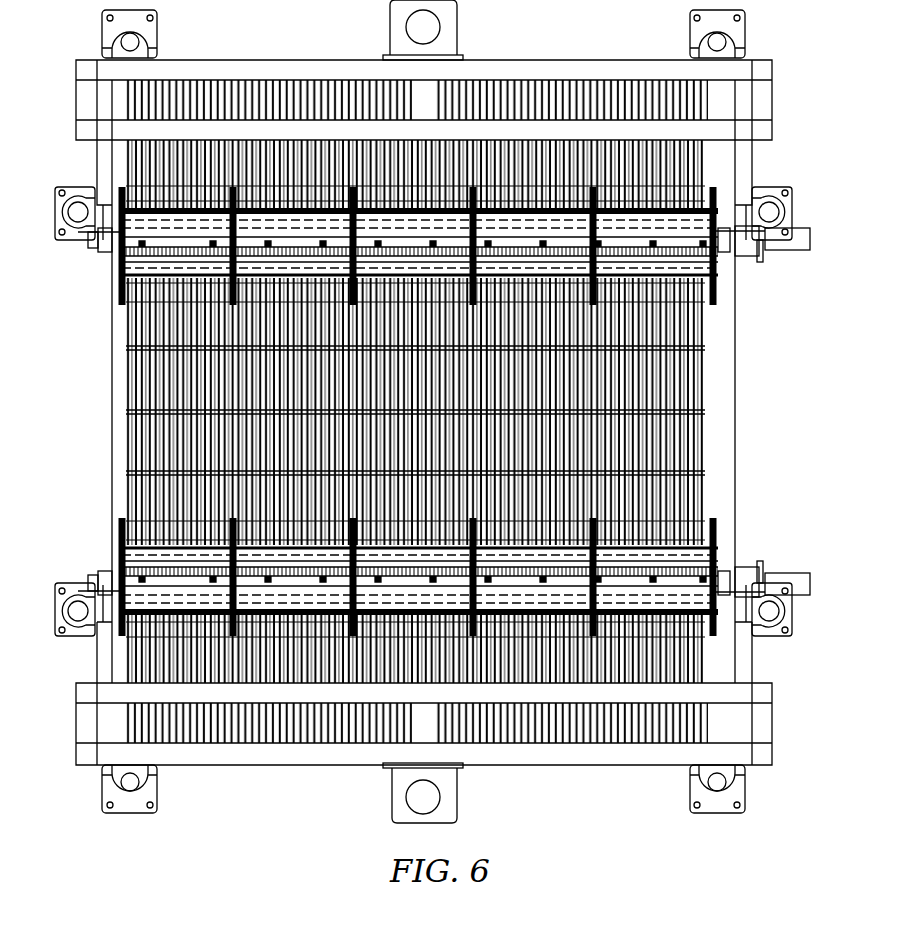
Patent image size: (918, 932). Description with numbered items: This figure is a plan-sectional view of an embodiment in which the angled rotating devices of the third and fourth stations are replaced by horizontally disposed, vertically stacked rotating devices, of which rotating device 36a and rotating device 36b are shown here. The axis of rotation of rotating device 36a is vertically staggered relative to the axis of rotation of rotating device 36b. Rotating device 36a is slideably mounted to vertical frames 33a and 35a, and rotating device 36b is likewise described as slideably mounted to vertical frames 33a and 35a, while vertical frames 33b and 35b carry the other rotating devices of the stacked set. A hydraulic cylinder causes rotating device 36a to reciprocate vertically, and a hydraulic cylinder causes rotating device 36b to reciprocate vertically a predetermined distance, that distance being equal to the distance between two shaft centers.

The vertical frame 33a is at (131, 782).
The vertical frame 33b is at (131, 42).
The vertical frame 35a is at (78, 611).
The vertical frame 35b is at (78, 212).
The rotating device 36a is at (100, 540).
The rotating device 36b is at (100, 272).